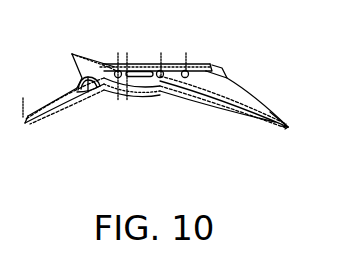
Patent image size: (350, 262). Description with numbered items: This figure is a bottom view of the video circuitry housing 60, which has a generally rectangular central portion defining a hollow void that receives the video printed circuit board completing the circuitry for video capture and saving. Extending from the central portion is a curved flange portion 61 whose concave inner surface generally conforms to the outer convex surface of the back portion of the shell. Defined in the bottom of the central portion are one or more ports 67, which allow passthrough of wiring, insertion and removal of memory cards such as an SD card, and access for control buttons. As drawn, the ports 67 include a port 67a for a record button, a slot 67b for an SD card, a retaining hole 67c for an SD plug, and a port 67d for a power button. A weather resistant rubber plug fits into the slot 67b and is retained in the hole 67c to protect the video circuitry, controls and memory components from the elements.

The video circuitry housing 60 is at (215, 65).
The curved flange portion 61 is at (288, 122).
The ports 67 is at (72, 54).
The port for a record button 67a is at (116, 77).
The slot for an SD card 67b is at (141, 77).
The retaining hole for an SD plug 67c is at (161, 77).
The port for a power button 67d is at (186, 77).